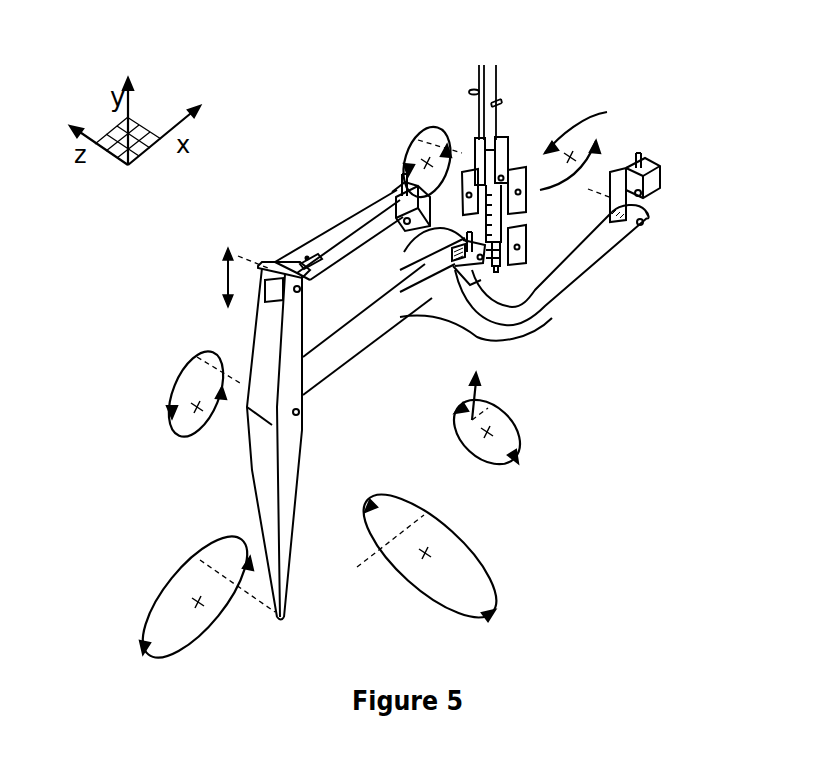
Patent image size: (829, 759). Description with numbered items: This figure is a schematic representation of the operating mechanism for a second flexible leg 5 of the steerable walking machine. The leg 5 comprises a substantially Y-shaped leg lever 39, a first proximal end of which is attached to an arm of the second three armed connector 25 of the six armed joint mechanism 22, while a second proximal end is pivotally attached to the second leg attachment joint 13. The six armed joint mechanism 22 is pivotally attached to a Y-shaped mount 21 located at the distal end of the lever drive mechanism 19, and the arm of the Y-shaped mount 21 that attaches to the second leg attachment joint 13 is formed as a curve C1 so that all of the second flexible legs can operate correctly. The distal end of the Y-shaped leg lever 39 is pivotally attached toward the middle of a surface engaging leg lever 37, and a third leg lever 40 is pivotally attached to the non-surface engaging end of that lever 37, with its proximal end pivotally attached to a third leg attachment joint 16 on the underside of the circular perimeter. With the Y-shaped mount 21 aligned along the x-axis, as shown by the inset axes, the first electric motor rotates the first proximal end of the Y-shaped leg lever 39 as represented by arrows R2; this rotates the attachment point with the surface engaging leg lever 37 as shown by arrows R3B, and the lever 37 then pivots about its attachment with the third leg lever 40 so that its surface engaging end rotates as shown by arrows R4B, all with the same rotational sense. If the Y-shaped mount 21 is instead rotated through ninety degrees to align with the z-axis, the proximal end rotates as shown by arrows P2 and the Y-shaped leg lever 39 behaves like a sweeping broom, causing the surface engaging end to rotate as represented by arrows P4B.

The second flexible leg 5 is at (298, 95).
The second leg attachment joint 13 is at (648, 172).
The third leg attachment joint 16 is at (397, 194).
The lever drive mechanism 19 is at (476, 86).
The Y-shaped mount 21 is at (512, 152).
The six armed joint mechanism 22 is at (586, 146).
The second three armed connector 25 is at (404, 252).
The surface engaging leg lever 37 is at (265, 345).
The Y-shaped leg lever 39 is at (426, 289).
The third leg lever 40 is at (345, 232).
The curve C1 is at (568, 325).
The arrows R2 is at (428, 150).
The arrows R3B is at (186, 394).
The arrows P2 is at (486, 425).
The arrows P4B is at (429, 555).
The arrows R4B is at (200, 597).